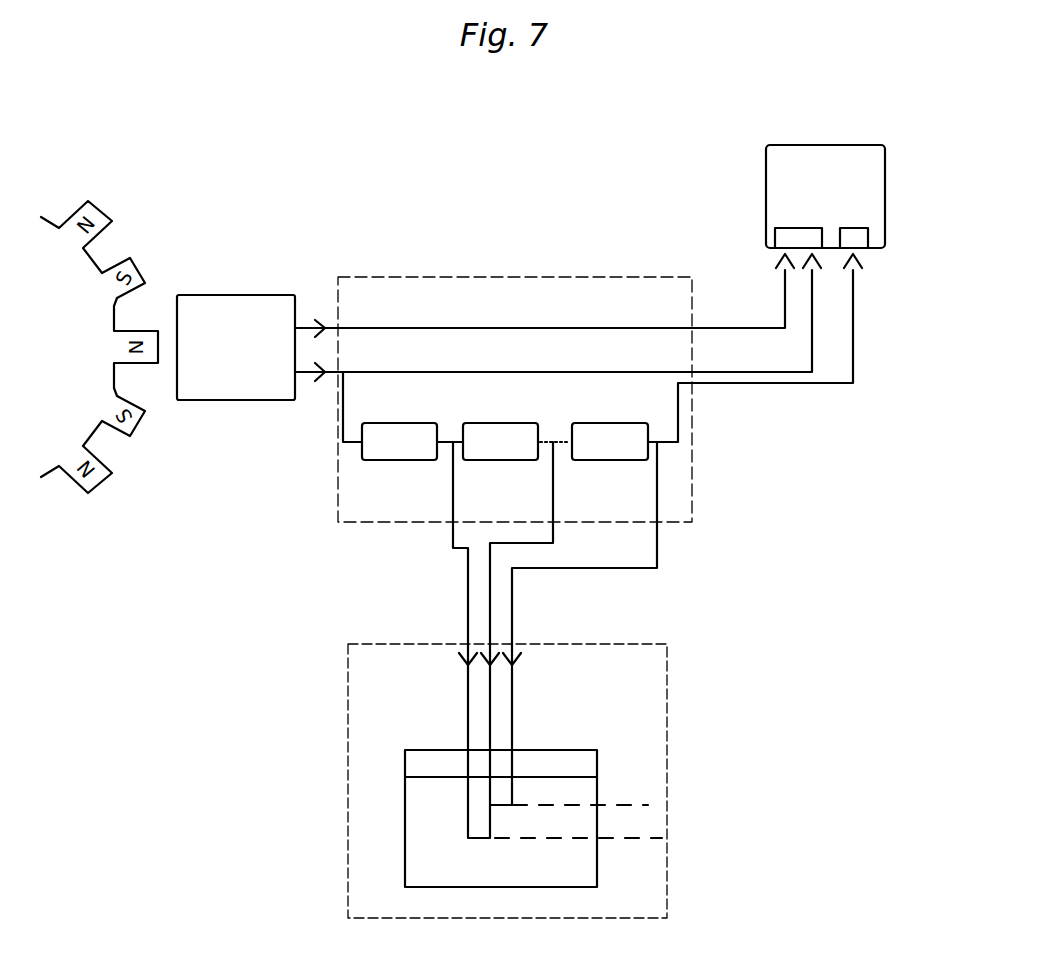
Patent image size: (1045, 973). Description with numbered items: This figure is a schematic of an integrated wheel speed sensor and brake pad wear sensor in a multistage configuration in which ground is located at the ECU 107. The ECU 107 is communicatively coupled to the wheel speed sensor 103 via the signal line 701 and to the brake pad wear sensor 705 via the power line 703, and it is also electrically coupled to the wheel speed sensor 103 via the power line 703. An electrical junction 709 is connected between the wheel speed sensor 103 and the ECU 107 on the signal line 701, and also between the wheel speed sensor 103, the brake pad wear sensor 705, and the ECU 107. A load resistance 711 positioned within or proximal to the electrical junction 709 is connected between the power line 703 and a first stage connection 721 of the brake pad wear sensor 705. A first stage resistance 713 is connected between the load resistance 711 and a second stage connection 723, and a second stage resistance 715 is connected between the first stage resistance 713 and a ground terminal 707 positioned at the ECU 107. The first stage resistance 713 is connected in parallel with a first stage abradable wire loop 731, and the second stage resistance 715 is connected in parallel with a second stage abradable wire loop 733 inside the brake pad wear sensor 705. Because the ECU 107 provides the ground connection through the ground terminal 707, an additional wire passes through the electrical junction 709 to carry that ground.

The wheel speed sensor 103 is at (210, 401).
The ECU 107 is at (766, 193).
The signal line 701 is at (739, 328).
The power line 703 is at (765, 372).
The brake pad wear sensor 705 is at (348, 682).
The ground terminal 707 is at (856, 303).
The electrical junction 709 is at (338, 517).
The load resistance 711 is at (403, 461).
The first stage resistance 713 is at (503, 461).
The second stage resistance 715 is at (606, 461).
The first stage connection 721 is at (467, 695).
The second stage connection 723 is at (492, 720).
The first stage abradable wire loop 731 is at (607, 835).
The second stage abradable wire loop 733 is at (611, 800).